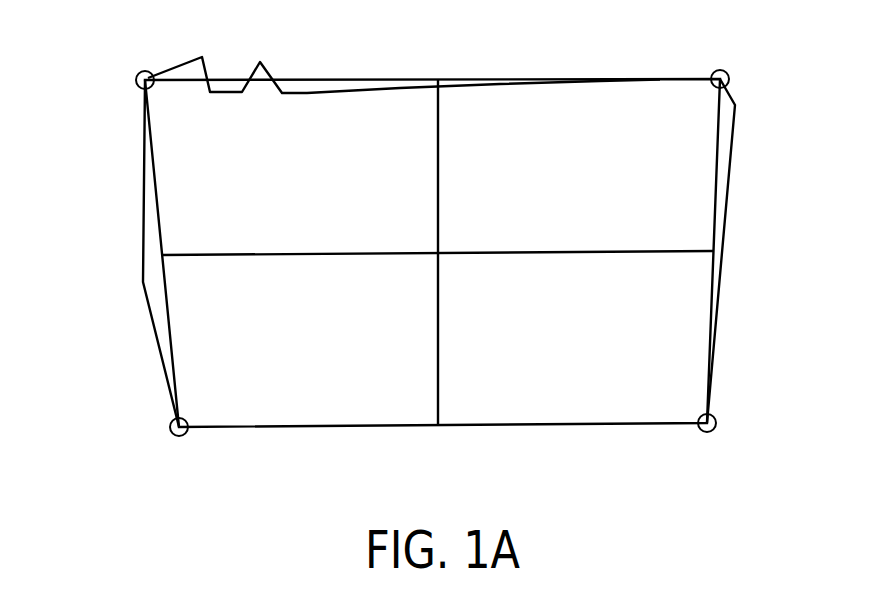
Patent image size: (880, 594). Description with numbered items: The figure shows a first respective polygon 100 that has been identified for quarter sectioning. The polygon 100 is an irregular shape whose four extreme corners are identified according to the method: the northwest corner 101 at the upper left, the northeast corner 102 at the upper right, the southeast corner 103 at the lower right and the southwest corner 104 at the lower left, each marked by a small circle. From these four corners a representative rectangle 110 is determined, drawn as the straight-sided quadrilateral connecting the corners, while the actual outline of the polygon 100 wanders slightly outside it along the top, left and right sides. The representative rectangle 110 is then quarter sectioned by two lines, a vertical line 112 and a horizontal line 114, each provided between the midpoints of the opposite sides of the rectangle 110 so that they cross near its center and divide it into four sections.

The polygon 100 is at (425, 269).
The northwest corner 101 is at (138, 73).
The northeast corner 102 is at (727, 72).
The southeast corner 103 is at (712, 431).
The southwest corner 104 is at (173, 437).
The representative rectangle 110 is at (168, 307).
The quarter sectioning line 112 is at (438, 140).
The quarter sectioning line 114 is at (575, 247).